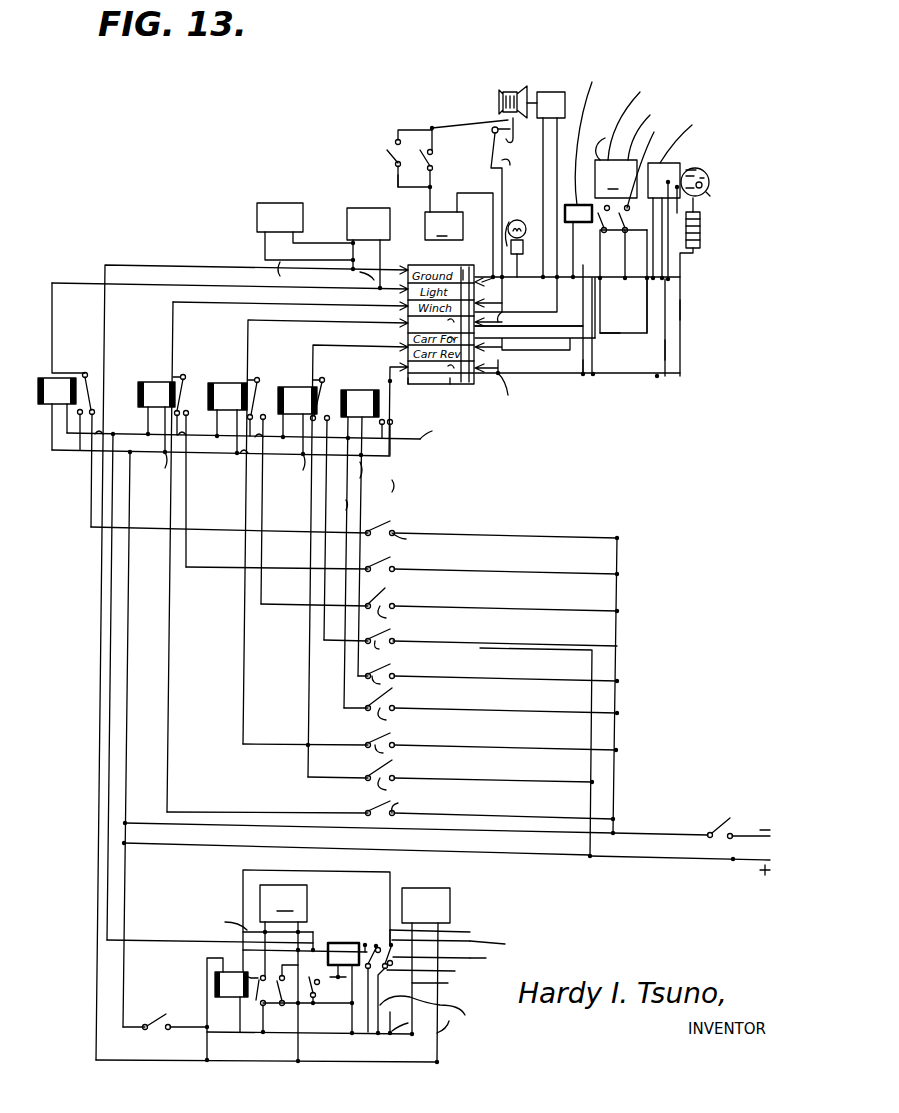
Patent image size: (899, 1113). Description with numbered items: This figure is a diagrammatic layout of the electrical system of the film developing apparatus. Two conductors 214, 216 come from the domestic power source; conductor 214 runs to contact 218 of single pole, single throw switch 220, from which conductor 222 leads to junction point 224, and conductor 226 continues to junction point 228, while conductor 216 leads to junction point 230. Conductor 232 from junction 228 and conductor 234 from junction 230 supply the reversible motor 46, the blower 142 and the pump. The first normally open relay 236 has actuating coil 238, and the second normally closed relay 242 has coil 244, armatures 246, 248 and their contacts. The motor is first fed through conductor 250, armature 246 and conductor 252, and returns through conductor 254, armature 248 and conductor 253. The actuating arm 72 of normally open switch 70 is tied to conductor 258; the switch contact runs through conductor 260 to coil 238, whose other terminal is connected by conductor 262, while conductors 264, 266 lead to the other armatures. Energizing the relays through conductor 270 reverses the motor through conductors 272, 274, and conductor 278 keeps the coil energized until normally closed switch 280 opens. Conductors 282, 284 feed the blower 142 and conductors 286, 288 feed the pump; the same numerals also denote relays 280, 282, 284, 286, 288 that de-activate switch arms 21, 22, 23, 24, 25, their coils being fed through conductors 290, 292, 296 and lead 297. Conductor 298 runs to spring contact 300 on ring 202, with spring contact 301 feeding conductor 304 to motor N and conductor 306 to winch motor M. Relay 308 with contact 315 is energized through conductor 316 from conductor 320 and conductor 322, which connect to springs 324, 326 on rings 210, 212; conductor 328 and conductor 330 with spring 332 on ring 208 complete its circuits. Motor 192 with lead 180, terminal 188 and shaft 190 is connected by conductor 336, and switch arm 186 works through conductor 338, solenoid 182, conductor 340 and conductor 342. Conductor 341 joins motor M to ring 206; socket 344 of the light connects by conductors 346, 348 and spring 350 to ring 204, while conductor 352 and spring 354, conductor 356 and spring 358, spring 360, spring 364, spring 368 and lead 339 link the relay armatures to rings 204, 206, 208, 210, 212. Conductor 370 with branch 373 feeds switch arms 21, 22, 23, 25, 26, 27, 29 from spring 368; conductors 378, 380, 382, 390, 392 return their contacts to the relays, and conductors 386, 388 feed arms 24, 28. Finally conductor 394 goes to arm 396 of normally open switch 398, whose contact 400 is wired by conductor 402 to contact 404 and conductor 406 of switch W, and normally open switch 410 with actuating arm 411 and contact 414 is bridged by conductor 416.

The switch arm 21 is at (398, 523).
The switch arm 22 is at (396, 564).
The switch arm 23 is at (402, 602).
The switch arm 24 is at (397, 634).
The switch arm 25 is at (441, 668).
The switch arm 26 is at (388, 704).
The switch arm 27 is at (392, 736).
The switch arm 28 is at (397, 771).
The switch arm 29 is at (380, 800).
The blower motor relay 46 is at (283, 944).
The normally open switch 70 is at (318, 988).
The actuating arm 72 is at (305, 990).
The blower 142 is at (430, 888).
The motor lead 180 is at (682, 262).
The solenoid 182 is at (700, 238).
The switch arm 186 is at (705, 172).
The motor terminal 188 is at (708, 178).
The motor shaft 190 is at (708, 186).
The motor 192 is at (680, 168).
The ring 202 is at (415, 268).
The ring 204 is at (490, 305).
The ring 206 is at (439, 324).
The ring 208 is at (442, 337).
The ring 210 is at (441, 366).
The ring 212 is at (462, 382).
The electrical conductor 214 is at (748, 822).
The electrical conductor 216 is at (733, 861).
The contact 218 is at (735, 830).
The single pole single throw switch 220 is at (714, 820).
The conductor 222 is at (688, 820).
The junction point 224 is at (616, 836).
The conductor 226 is at (270, 835).
The junction point 228 is at (131, 826).
The junction point 230 is at (94, 856).
The conductor 232 is at (122, 905).
The conductor 234 is at (82, 976).
The first normally open relay 236 is at (377, 944).
The actuating coil 238 is at (390, 942).
The second normally closed relay 242 is at (231, 1002).
The actuating coil 244 is at (230, 998).
The armature 246 is at (249, 1002).
The armature 248 is at (306, 1005).
The conductor 250 is at (262, 1033).
The conductor 252 is at (202, 941).
The conductor 253 is at (290, 1044).
The conductor 254 is at (243, 933).
The conductor 258 is at (343, 1034).
The conductor 260 is at (345, 983).
The conductor 262 is at (363, 1018).
The conductor 264 is at (436, 1007).
The conductor 266 is at (389, 1018).
The conductor 270 is at (206, 1064).
The conductor 272 is at (312, 872).
The conductor 274 is at (345, 940).
The conductor 278 is at (118, 948).
The normally closed switch / relay 280 is at (35, 373).
The relay 282 is at (138, 394).
The relay 284 is at (211, 382).
The relay 286 is at (296, 387).
The relay 288 is at (356, 390).
The conductor 290 is at (235, 458).
The conductor 292 is at (78, 416).
The conductor 296 is at (51, 438).
The conductor 297 is at (351, 281).
The conductor 298 is at (387, 276).
The spring contact 300 is at (230, 283).
The spring contact 301 is at (478, 280).
The conductor 304 is at (473, 194).
The conductor 306 is at (588, 137).
The relay 308 is at (575, 205).
The conductor 315 is at (605, 258).
The conductor 316 is at (585, 270).
The conductor 320 is at (571, 312).
The conductor 322 is at (542, 372).
The spring 324 is at (500, 340).
The spring 326 is at (500, 362).
The conductor 328 is at (610, 328).
The conductor 330 is at (608, 333).
The spring 332 is at (500, 327).
The conductor 336 is at (667, 352).
The conductor 338 is at (700, 214).
The conductor 339 is at (490, 325).
The conductor 340 is at (682, 312).
The conductor 341 is at (625, 115).
The conductor / spring 342 is at (668, 272).
The socket 344 is at (540, 248).
The conductor 346 is at (510, 228).
The conductor 348 is at (515, 315).
The spring 350 is at (577, 284).
The conductor 352 is at (159, 300).
The spring 354 is at (290, 301).
The conductor 356 is at (200, 306).
The spring 358 is at (325, 526).
The spring 360 is at (358, 557).
The spring 364 is at (395, 406).
The spring 368 is at (430, 380).
The conductor 370 is at (395, 470).
The conductor 373 is at (412, 489).
The conductor 378 is at (200, 812).
The conductor 380 is at (264, 604).
The conductor 382 is at (250, 672).
The conductor 386 is at (478, 648).
The conductor 388 is at (512, 788).
The conductor 390 is at (338, 504).
The conductor 392 is at (312, 522).
The conductor 394 is at (522, 163).
The arm 396 is at (485, 205).
The normally open switch 398 is at (488, 131).
The contact 400 is at (503, 104).
The conductor 402 is at (454, 118).
The contact 404 is at (433, 152).
The conductor 406 is at (426, 190).
The normally open electric switch 410 is at (393, 170).
The actuating arm 411 is at (394, 160).
The contact 414 is at (390, 143).
The conductor 416 is at (420, 130).